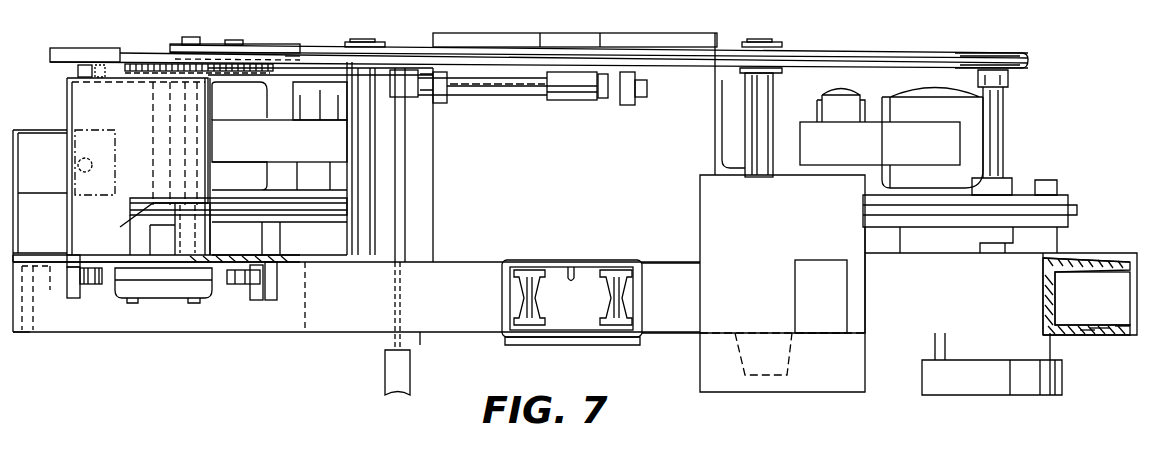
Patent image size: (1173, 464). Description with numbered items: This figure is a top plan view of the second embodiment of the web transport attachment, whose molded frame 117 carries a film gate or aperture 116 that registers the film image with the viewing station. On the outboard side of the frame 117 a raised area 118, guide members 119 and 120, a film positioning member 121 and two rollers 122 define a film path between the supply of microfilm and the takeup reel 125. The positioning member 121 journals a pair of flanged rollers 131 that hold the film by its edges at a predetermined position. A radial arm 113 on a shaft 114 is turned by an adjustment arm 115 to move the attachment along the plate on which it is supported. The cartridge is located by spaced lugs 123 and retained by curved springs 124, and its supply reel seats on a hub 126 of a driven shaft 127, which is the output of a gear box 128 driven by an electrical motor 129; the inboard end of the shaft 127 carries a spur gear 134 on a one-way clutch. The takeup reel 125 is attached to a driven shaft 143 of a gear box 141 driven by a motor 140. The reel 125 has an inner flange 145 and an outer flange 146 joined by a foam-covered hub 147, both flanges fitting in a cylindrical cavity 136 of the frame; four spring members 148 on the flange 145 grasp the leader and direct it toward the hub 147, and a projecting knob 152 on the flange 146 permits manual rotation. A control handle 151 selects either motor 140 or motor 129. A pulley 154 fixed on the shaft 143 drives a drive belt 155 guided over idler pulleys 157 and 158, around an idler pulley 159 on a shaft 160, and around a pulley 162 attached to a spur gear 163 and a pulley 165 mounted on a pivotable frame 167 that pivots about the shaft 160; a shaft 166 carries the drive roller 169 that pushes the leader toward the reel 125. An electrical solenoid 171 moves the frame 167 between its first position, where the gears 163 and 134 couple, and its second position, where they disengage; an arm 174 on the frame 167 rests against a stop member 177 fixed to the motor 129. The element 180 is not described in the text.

The radial arm 113 is at (568, 96).
The shaft 114 is at (500, 96).
The adjustment arm 115 is at (398, 187).
The film gate or aperture 116 is at (575, 275).
The molded frame 117 is at (18, 342).
The raised area 118 is at (422, 338).
The guide member 119 is at (478, 332).
The guide member 120 is at (681, 318).
The film positioning member 121 is at (530, 258).
The rollers 122 is at (240, 287).
The spaced lugs 123 is at (35, 310).
The curved springs 124 is at (76, 302).
The takeup reel 125 is at (1104, 346).
The hub 126 is at (162, 300).
The driven shaft 127 is at (150, 250).
The gear box 128 is at (302, 220).
The electrical motor 129 is at (294, 148).
The rollers 131 is at (524, 291).
The spur gear 134 is at (182, 95).
The cylindrical cavity 136 is at (1115, 337).
The motor 140 is at (912, 151).
The gear box 141 is at (948, 240).
The driven shaft 143 is at (1000, 128).
The inner flange 145 is at (1098, 262).
The outer flange 146 is at (1085, 340).
The hub 147 is at (1043, 300).
The spring members 148 is at (1092, 298).
The control handle 151 is at (766, 380).
The projecting knob 152 is at (968, 396).
The pulley 154 is at (1012, 53).
The drive belt 155 is at (818, 66).
The idler pulleys 157 is at (777, 42).
The idler pulleys 158 is at (382, 42).
The idler pulley 159 is at (180, 38).
The shaft 160 is at (200, 37).
The pulley 162 is at (262, 44).
The spur gear 163 is at (290, 58).
The pulley 165 is at (90, 47).
The shaft 166 is at (75, 72).
The pivotable frame 167 is at (80, 114).
The drive roller 169 is at (92, 288).
The electrical solenoid 171 is at (60, 188).
The arm 174 is at (268, 86).
The stop member 177 is at (318, 86).
The block 180 is at (700, 210).